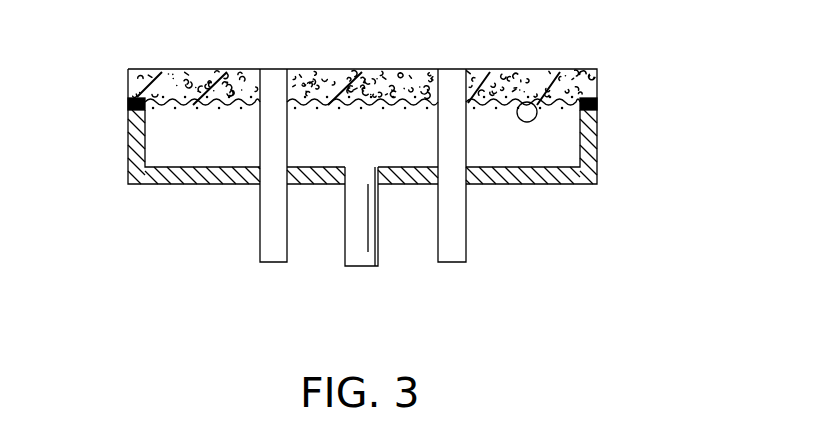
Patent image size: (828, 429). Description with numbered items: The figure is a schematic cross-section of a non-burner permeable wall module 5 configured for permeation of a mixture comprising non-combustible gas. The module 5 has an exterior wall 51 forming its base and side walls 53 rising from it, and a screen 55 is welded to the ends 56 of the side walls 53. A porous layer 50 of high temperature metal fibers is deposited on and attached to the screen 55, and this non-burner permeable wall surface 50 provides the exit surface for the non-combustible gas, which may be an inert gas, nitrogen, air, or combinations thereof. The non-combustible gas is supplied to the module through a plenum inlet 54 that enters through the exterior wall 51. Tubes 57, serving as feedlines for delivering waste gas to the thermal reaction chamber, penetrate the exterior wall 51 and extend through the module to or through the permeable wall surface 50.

The non-burner permeable wall module 5 is at (228, 212).
The porous layer 50 is at (169, 69).
The exterior wall 51 is at (150, 185).
The side walls 53 is at (128, 150).
The plenum inlet 54 is at (379, 251).
The screen 55 is at (529, 103).
The ends of side walls 56 is at (128, 104).
The tubes 57 is at (273, 263).